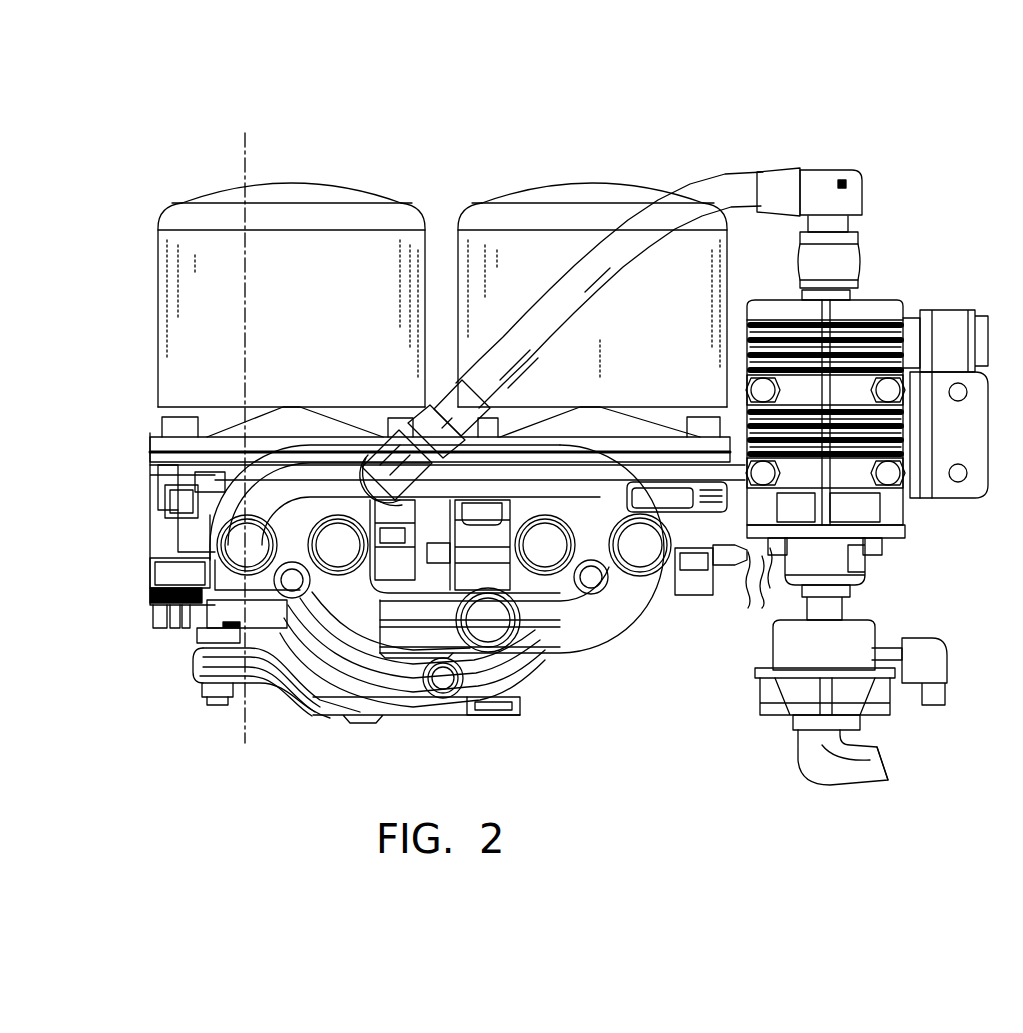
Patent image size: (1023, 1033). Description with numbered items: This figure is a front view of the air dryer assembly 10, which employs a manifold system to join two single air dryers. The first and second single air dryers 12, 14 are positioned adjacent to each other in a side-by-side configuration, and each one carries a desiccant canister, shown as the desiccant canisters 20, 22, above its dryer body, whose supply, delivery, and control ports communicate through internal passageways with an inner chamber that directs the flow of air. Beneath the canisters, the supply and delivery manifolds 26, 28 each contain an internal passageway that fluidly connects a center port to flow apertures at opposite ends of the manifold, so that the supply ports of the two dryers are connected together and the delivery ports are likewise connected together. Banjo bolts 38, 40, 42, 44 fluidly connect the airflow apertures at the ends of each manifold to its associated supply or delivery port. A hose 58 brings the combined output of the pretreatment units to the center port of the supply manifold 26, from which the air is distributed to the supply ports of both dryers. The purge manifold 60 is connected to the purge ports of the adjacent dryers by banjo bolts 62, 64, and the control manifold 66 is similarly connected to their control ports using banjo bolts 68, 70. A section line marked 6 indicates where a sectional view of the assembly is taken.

The section line 6- 6 is at (195, 743).
The air dryer assembly 10 is at (551, 140).
The first single air dryer 12 is at (293, 172).
The second single air dryer 14 is at (590, 177).
The desiccant canister 20 is at (420, 200).
The desiccant canister 22 is at (487, 200).
The supply manifold 26 is at (310, 455).
The delivery manifold 28 is at (630, 627).
The banjo bolt 38 is at (243, 555).
The banjo bolt 40 is at (341, 553).
The banjo bolt 42 is at (548, 555).
The banjo bolt 44 is at (653, 553).
The hose 58 is at (705, 183).
The purge manifold 60 is at (482, 687).
The banjo bolt 62 is at (292, 582).
The banjo bolt 64 is at (597, 583).
The control manifold 66 is at (217, 672).
The banjo bolt 68 is at (200, 692).
The banjo bolt 70 is at (518, 697).